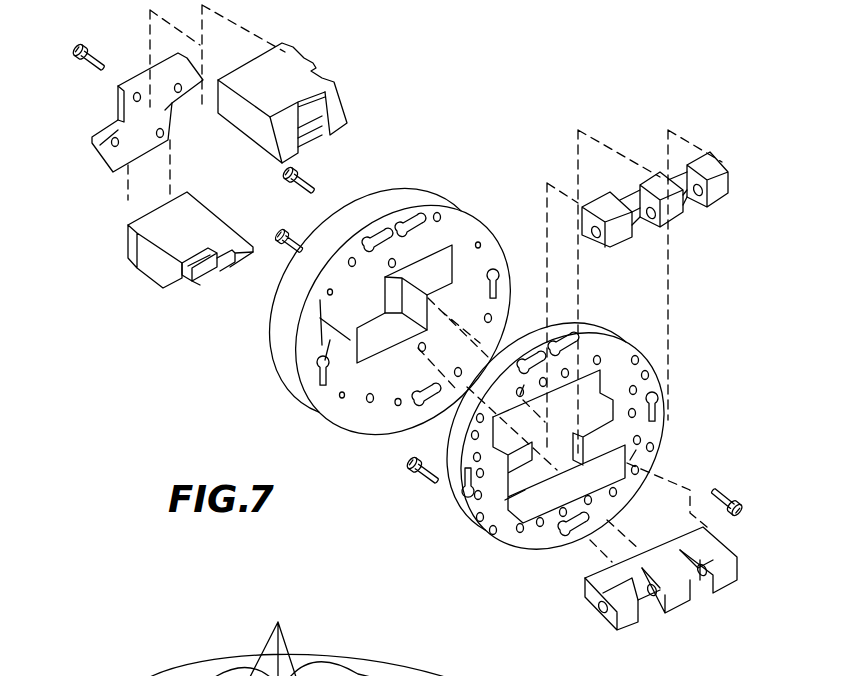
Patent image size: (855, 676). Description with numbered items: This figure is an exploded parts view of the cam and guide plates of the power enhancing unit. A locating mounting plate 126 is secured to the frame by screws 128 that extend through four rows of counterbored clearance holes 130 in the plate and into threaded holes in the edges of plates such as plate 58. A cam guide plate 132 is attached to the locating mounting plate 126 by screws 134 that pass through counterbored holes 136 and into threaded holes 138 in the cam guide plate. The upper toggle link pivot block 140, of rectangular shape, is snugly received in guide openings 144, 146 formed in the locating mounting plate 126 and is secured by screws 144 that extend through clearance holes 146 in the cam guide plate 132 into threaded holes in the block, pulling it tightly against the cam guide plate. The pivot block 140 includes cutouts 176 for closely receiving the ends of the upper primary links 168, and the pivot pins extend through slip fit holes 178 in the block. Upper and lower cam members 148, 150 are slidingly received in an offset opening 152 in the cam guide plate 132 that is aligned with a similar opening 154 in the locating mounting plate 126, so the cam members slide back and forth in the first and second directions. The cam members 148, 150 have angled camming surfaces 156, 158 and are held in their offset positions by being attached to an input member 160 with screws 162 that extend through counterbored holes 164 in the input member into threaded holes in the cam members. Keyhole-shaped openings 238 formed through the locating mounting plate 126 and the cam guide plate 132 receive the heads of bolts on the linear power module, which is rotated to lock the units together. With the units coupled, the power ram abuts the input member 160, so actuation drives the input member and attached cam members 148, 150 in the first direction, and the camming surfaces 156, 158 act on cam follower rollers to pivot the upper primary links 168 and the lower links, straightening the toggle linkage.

The plate 58 is at (478, 675).
The locating mounting plate 126 is at (655, 345).
The screws 128 is at (418, 480).
The counterbored clearance holes 130 is at (604, 340).
The cam guide plate 132 is at (425, 190).
The screws 134 is at (730, 496).
The counterbored holes 136 is at (665, 441).
The threaded holes 138 is at (470, 355).
The upper toggle link pivot block 140 is at (722, 150).
The guide openings / screws 144 is at (318, 176).
The guide openings / clearance holes 146 is at (398, 262).
The upper cam member 148 is at (298, 44).
The lower cam member 150 is at (140, 278).
The offset opening 152 is at (330, 408).
The opening 154 is at (580, 530).
The angled camming surface 156 is at (336, 125).
The angled camming surface 158 is at (228, 270).
The input member 160 is at (145, 72).
The screws 162 is at (86, 62).
The counterbored holes 164 is at (104, 152).
The upper primary links 168 is at (297, 635).
The cutouts 176 is at (666, 239).
The slip fit holes 178 is at (595, 242).
The keyhole-shaped openings 238 is at (405, 225).